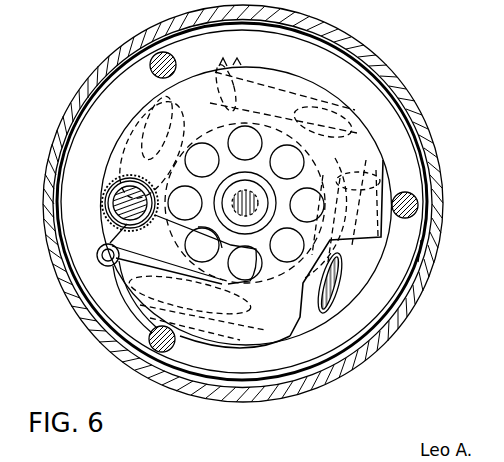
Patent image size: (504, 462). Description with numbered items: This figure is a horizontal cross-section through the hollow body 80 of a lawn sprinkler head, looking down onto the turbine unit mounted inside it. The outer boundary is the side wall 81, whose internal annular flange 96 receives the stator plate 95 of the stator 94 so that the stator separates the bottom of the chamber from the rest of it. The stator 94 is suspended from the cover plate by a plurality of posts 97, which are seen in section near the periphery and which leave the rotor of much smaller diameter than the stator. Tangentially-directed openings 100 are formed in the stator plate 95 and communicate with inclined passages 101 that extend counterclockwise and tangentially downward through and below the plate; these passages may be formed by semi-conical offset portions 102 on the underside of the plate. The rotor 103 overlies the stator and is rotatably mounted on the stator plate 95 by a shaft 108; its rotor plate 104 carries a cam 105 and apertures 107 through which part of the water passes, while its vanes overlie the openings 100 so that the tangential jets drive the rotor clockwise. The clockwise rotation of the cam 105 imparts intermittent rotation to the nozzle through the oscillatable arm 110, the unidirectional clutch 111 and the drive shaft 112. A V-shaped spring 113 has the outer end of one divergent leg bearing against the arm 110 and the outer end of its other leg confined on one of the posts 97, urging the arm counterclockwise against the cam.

The hollow body 80 is at (427, 134).
The side wall 81 is at (365, 351).
The stator 94 is at (370, 73).
The stator plate 95 is at (100, 108).
The internal annular flange 96 is at (427, 256).
The posts 97 is at (158, 52).
The tangentially-directed openings 100 is at (346, 286).
The inclined passages 101 is at (384, 178).
The semi-conical offset portions 102 is at (288, 84).
The rotor 103 is at (279, 340).
The rotor plate 104 is at (360, 152).
The cam 105 is at (261, 183).
The apertures 107 is at (308, 220).
The shaft 108 is at (228, 188).
The oscillatable arm 110 is at (236, 285).
The unidirectional clutch 111 is at (103, 228).
The drive shaft 112 is at (108, 183).
The V-shaped spring 113 is at (118, 296).